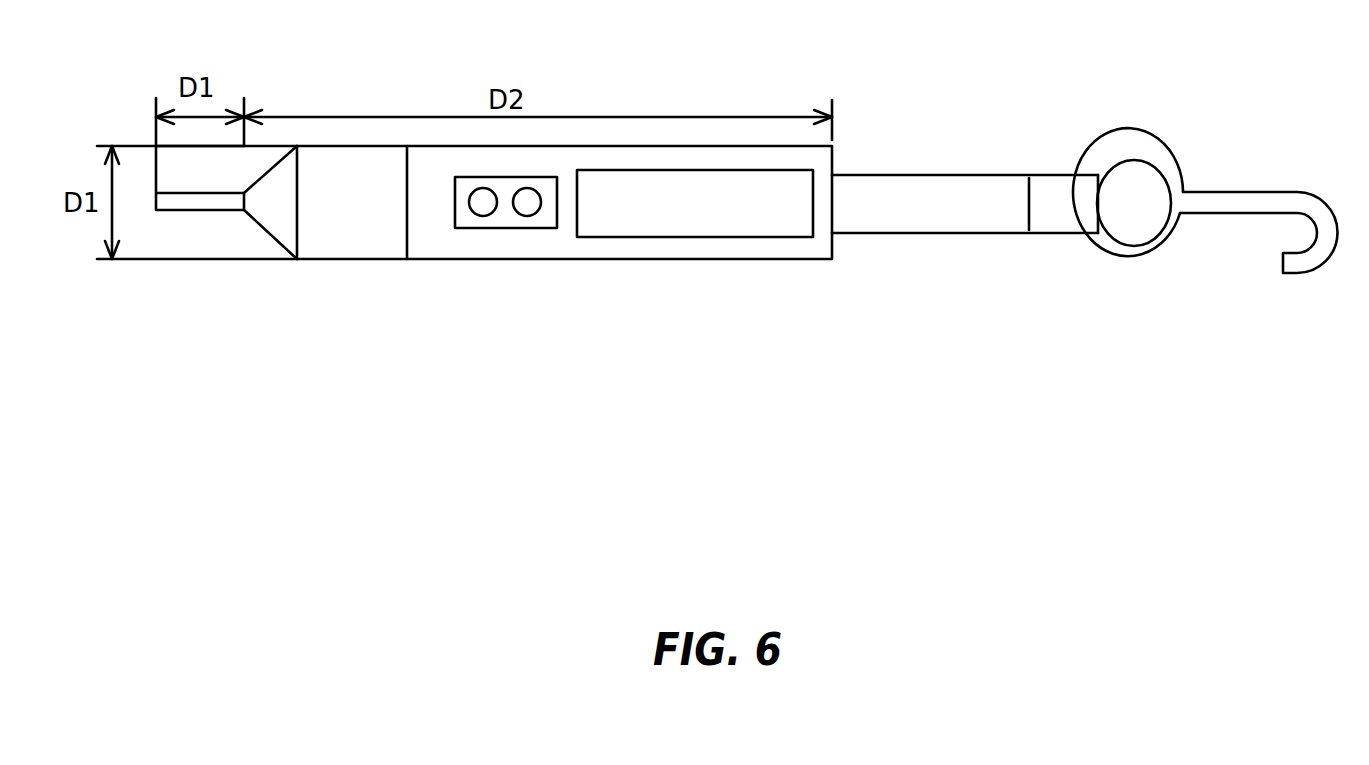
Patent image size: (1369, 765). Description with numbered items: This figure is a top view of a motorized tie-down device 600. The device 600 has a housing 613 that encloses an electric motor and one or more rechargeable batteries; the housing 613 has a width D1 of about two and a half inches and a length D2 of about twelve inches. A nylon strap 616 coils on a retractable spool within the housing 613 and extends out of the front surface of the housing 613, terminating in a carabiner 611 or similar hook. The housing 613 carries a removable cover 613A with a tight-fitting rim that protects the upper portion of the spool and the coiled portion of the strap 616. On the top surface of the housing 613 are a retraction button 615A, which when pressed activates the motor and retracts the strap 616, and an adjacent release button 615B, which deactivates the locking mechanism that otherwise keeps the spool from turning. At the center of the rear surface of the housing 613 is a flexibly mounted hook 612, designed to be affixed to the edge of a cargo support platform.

The motorized tie-down device 600 is at (350, 259).
The hook 612 is at (193, 210).
The housing 613 is at (833, 242).
The removable cover 613A is at (730, 237).
The retraction button 615A is at (483, 215).
The release button 615B is at (527, 215).
The nylon strap 616 is at (1045, 233).
The carabiner 611 is at (1209, 191).